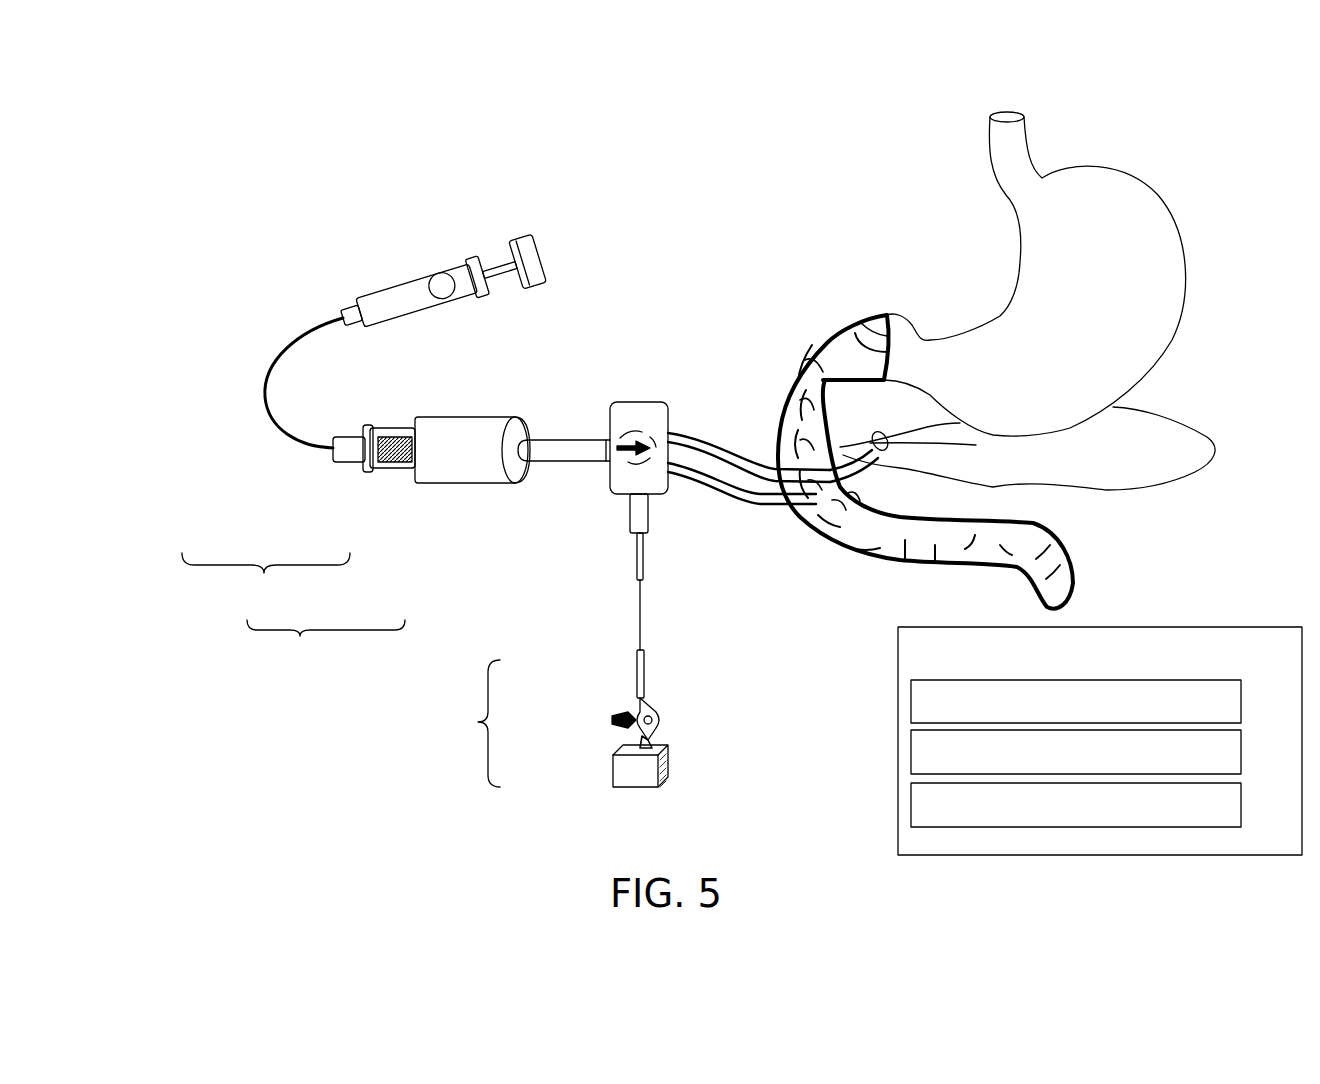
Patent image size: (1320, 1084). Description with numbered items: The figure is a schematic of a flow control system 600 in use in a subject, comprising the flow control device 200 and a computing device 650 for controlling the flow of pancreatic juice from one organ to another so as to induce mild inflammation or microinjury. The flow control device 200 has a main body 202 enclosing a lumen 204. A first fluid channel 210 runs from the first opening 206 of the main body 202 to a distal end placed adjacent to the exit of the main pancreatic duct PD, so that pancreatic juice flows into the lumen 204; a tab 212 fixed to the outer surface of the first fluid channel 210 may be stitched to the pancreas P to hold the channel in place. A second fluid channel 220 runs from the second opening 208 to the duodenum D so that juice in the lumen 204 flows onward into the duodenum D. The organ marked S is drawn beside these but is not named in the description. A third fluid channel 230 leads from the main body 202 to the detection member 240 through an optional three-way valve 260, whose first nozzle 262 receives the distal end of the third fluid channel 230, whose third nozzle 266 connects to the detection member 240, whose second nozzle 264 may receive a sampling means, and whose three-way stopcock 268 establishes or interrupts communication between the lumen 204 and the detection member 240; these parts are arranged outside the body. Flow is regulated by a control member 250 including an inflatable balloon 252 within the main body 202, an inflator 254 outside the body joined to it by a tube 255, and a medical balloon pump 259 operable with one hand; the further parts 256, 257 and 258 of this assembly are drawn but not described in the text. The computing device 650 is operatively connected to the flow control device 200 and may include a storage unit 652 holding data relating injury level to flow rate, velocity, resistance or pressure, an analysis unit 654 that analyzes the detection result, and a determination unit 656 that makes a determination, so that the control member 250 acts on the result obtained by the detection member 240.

The flow control system 600 is at (120, 164).
The flow control device 200 is at (322, 265).
The medical balloon pump 259 is at (383, 305).
The tube connector 258 is at (355, 462).
The piston 257 is at (397, 467).
The syringe barrel 256 is at (490, 458).
The tube 255 is at (560, 453).
The inflator 254 is at (266, 584).
The control member 250 is at (326, 644).
The inflatable balloon 252 is at (603, 452).
The main body 202 is at (607, 443).
The lumen 204 is at (632, 420).
The first opening 206 is at (668, 433).
The first fluid channel 210 is at (707, 453).
The second opening 208 is at (670, 473).
The second fluid channel 220 is at (728, 497).
The tab 212 is at (823, 400).
The third fluid channel 230 is at (637, 617).
The three-way valve 260 is at (456, 723).
The first nozzle 262 is at (640, 698).
The second nozzle 264 is at (615, 718).
The three-way stopcock 268 is at (633, 724).
The third nozzle 266 is at (625, 744).
The detection member 240 is at (668, 766).
The computing device 650 is at (958, 669).
The storage unit 652 is at (1224, 712).
The analysis unit 654 is at (1231, 764).
The determination unit 656 is at (1231, 816).
The stomach S is at (1063, 313).
The pancreas P is at (1168, 460).
The main pancreatic duct PD is at (976, 445).
The duodenum D is at (976, 548).